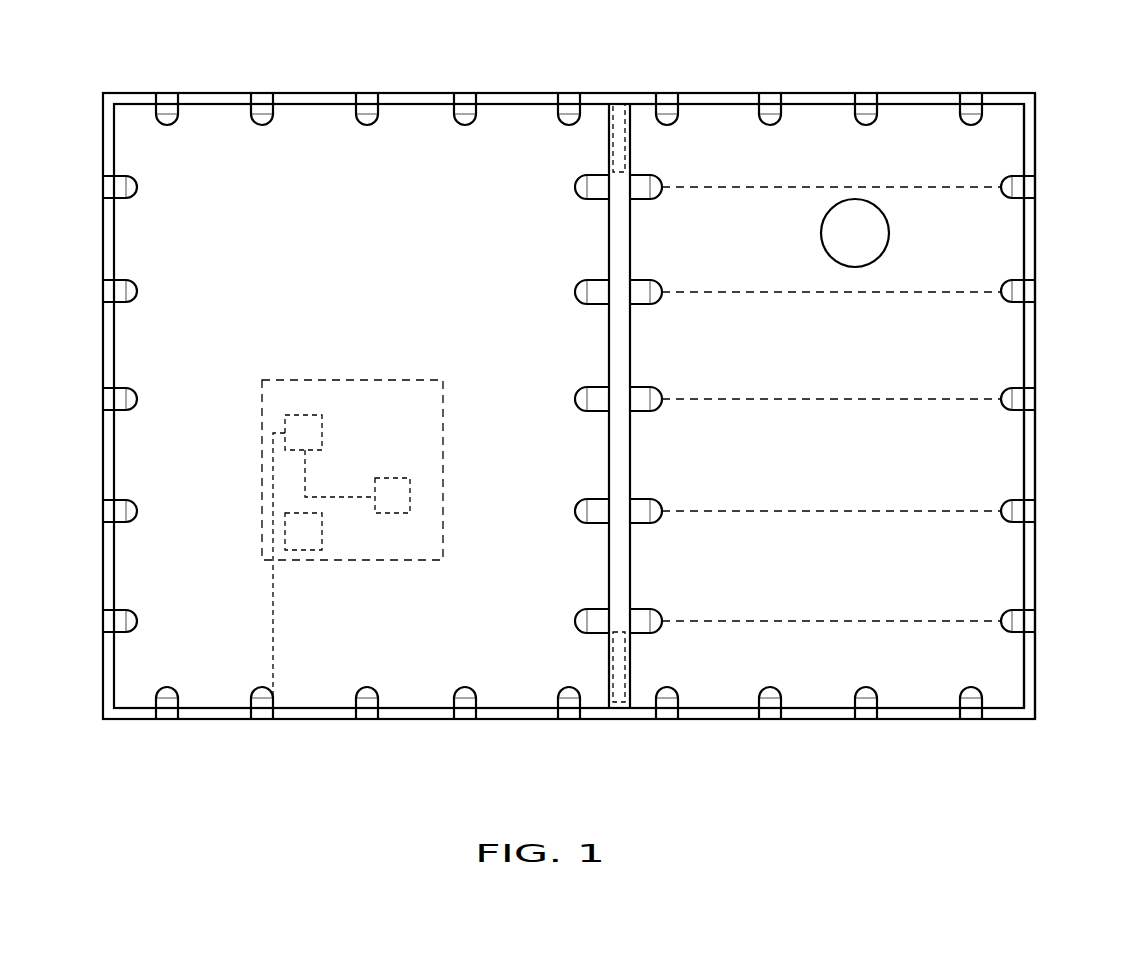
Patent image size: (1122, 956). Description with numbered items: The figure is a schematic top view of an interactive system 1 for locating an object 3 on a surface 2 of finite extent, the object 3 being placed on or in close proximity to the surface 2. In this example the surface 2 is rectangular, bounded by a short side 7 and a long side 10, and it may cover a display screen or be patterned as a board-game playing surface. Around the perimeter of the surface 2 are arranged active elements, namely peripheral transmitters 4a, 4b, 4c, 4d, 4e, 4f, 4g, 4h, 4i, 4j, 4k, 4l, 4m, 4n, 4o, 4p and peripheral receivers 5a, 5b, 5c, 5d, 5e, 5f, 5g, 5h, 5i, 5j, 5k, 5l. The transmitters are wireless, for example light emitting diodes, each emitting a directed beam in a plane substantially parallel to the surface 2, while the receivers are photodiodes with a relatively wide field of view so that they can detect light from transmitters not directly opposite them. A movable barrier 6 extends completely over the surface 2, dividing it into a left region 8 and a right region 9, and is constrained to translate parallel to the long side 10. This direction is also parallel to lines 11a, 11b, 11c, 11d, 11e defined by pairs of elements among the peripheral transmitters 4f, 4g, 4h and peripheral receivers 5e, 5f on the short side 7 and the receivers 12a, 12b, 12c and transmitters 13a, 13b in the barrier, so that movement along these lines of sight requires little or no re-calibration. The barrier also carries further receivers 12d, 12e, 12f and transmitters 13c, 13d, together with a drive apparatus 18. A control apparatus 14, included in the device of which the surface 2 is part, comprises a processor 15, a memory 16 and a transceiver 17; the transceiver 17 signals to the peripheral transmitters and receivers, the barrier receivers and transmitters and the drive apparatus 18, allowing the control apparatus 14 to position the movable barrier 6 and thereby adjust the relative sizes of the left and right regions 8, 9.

The interactive system 1 is at (1064, 77).
The surface 2 is at (521, 128).
The object 3 is at (847, 247).
The peripheral transmitter 4a is at (168, 99).
The peripheral transmitter 4b is at (368, 99).
The peripheral transmitter 4c is at (570, 99).
The peripheral transmitter 4d is at (771, 99).
The peripheral transmitter 4e is at (972, 99).
The peripheral transmitter 4f is at (1021, 189).
The peripheral transmitter 4g is at (1021, 401).
The peripheral transmitter 4h is at (1021, 623).
The peripheral transmitter 4i is at (972, 712).
The peripheral transmitter 4j is at (771, 712).
The peripheral transmitter 4k is at (570, 712).
The peripheral transmitter 4l is at (368, 712).
The peripheral transmitter 4m is at (168, 712).
The peripheral transmitter 4n is at (119, 623).
The peripheral transmitter 4o is at (119, 401).
The peripheral transmitter 4p is at (119, 189).
The peripheral receiver 5a is at (263, 99).
The peripheral receiver 5b is at (466, 99).
The peripheral receiver 5c is at (668, 99).
The peripheral receiver 5d is at (867, 99).
The peripheral receiver 5e is at (1021, 293).
The peripheral receiver 5f is at (1021, 513).
The peripheral receiver 5g is at (867, 712).
The peripheral receiver 5h is at (668, 712).
The peripheral receiver 5i is at (466, 712).
The peripheral receiver 5j is at (263, 712).
The peripheral receiver 5k is at (119, 513).
The peripheral receiver 5l is at (119, 293).
The movable barrier 6 is at (607, 351).
The short side 7 is at (1038, 340).
The left region 8 is at (336, 301).
The right region 9 is at (848, 361).
The long side 10 is at (702, 96).
The line 11a is at (936, 186).
The line 11b is at (936, 291).
The line 11c is at (936, 398).
The line 11d is at (936, 510).
The line 11e is at (936, 620).
The receiver 12a is at (650, 187).
The receiver 12b is at (650, 399).
The receiver 12c is at (650, 621).
The receiver 12d is at (590, 622).
The receiver 12e is at (590, 400).
The receiver 12f is at (590, 188).
The transmitter 13a is at (650, 292).
The transmitter 13b is at (650, 511).
The transmitter 13c is at (590, 292).
The transmitter 13d is at (590, 512).
The control apparatus 14 is at (433, 382).
The processor 15 is at (393, 486).
The memory 16 is at (318, 543).
The transceiver 17 is at (318, 432).
The drive apparatus 18 is at (613, 158).